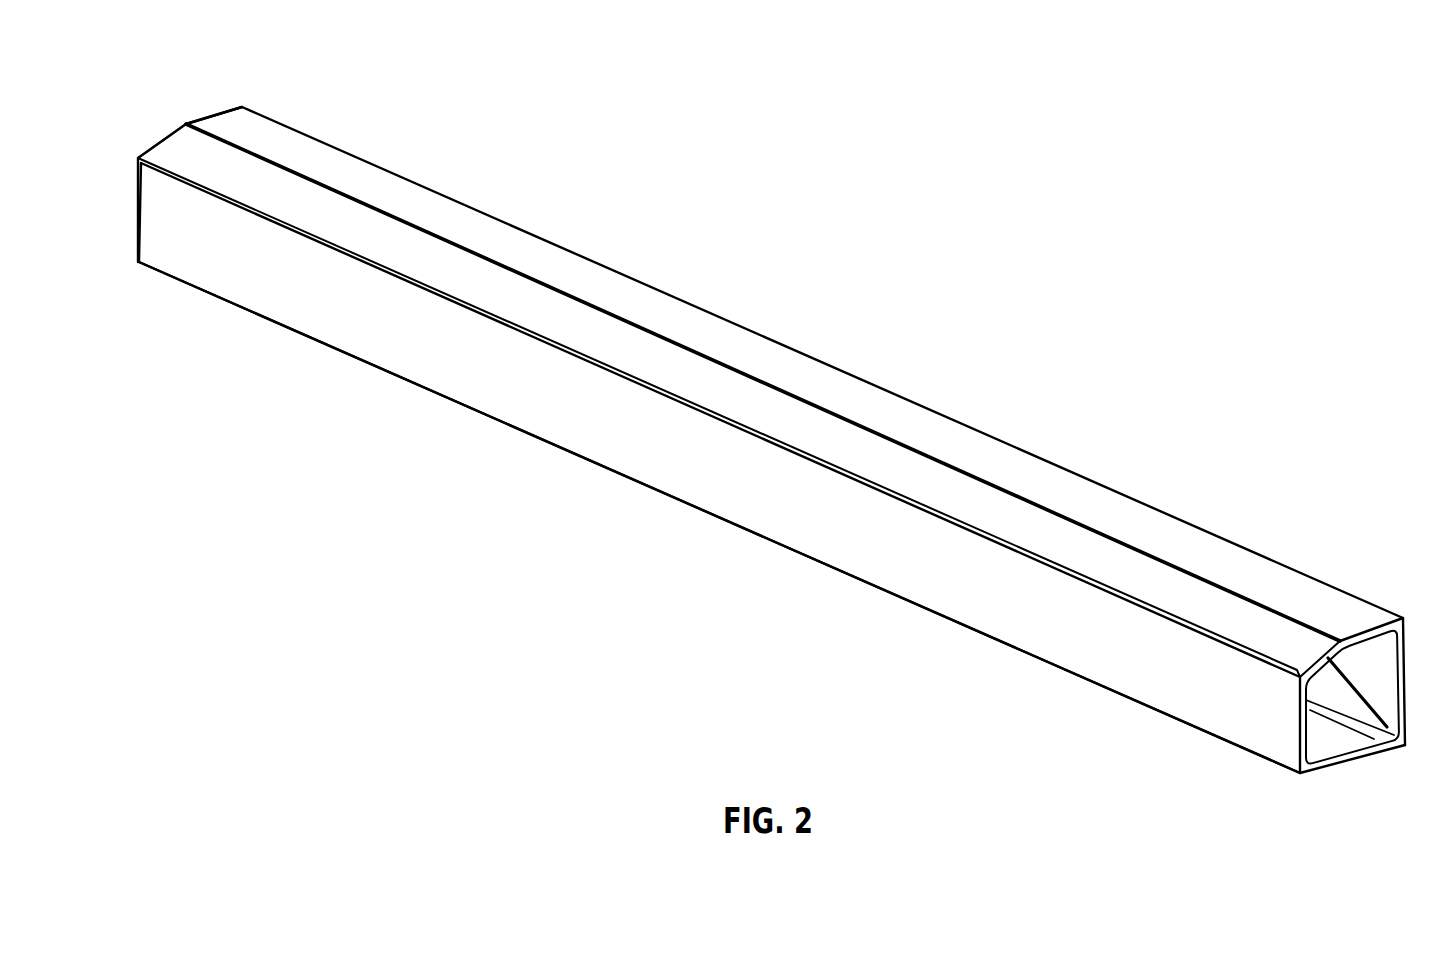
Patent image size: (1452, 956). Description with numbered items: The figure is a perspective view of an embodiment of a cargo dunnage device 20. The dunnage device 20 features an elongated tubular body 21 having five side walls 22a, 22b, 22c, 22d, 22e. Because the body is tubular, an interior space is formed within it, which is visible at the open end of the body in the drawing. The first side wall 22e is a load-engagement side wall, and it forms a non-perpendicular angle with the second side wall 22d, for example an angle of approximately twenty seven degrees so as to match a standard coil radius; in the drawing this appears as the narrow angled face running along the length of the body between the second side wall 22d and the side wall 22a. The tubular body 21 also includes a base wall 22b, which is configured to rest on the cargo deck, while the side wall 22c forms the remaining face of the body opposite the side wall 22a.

The cargo dunnage device 20 is at (787, 431).
The elongated tubular body 21 is at (668, 295).
The side wall 22a is at (638, 447).
The base wall 22b is at (1344, 764).
The side wall 22c is at (1404, 662).
The second side wall 22d is at (1008, 467).
The first side wall 22e is at (888, 453).